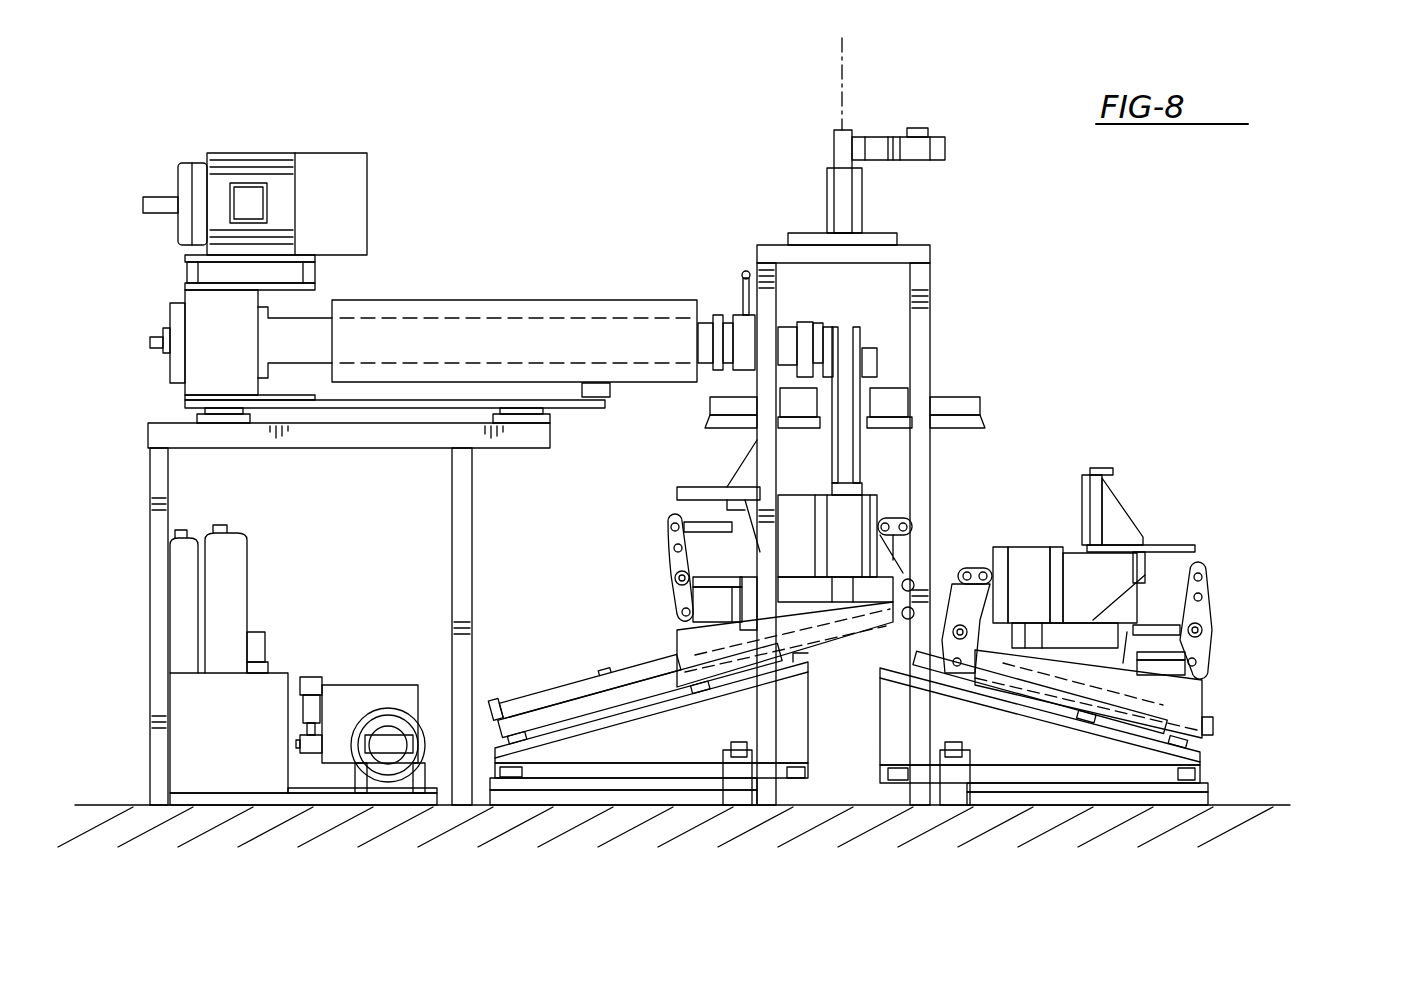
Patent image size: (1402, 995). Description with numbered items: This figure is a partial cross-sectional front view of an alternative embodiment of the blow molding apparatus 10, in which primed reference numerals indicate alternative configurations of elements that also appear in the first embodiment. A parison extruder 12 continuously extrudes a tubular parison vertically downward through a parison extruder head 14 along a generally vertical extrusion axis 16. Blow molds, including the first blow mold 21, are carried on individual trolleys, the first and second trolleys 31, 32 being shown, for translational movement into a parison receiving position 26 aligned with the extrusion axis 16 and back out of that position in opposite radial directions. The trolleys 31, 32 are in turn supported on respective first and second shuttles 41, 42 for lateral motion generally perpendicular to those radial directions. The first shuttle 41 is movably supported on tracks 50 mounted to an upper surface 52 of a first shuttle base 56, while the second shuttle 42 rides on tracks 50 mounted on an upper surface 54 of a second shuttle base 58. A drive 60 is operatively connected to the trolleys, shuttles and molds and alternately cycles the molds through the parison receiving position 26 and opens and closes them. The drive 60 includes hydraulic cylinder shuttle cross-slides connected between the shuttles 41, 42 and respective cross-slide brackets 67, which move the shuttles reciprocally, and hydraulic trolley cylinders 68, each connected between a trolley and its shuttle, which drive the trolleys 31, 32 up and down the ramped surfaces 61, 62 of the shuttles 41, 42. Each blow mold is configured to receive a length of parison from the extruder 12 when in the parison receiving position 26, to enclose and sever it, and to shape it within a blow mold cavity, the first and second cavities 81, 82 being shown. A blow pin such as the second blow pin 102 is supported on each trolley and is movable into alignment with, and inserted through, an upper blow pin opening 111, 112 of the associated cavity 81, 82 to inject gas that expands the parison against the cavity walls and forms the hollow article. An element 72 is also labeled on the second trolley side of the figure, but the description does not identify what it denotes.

The extrusion axis 16 is at (843, 68).
The blow molding apparatus 10 is at (1270, 268).
The parison extruder 12 is at (551, 308).
The parison extruder head 14 is at (857, 340).
The first blow mold 21 is at (743, 507).
The parison receiving position 26 is at (685, 494).
The first trolley 31 is at (686, 640).
The second trolley 32 is at (1203, 562).
The first shuttle 41 is at (597, 752).
The second shuttle 42 is at (1103, 797).
The tracks 50 is at (575, 722).
The upper surface of first shuttle base 52 is at (548, 786).
The upper surface of second shuttle base 54 is at (1018, 778).
The first shuttle base 56 is at (633, 795).
The second shuttle base 58 is at (1025, 796).
The drive 60 is at (510, 683).
The ramped surface of first shuttle 61 is at (603, 712).
The ramped surface of second shuttle 62 is at (1137, 734).
The cross-slide bracket 67 is at (735, 745).
The hydraulic trolley cylinder 68 is at (658, 657).
The clamp 72 is at (1058, 555).
The first blow mold cavity 81 is at (860, 510).
The second blow mold cavity 82 is at (1010, 550).
The second blow pin 102 is at (1120, 518).
The upper blow pin opening of first mold cavity 111 is at (853, 490).
The upper blow pin opening of second mold cavity 112 is at (1049, 552).